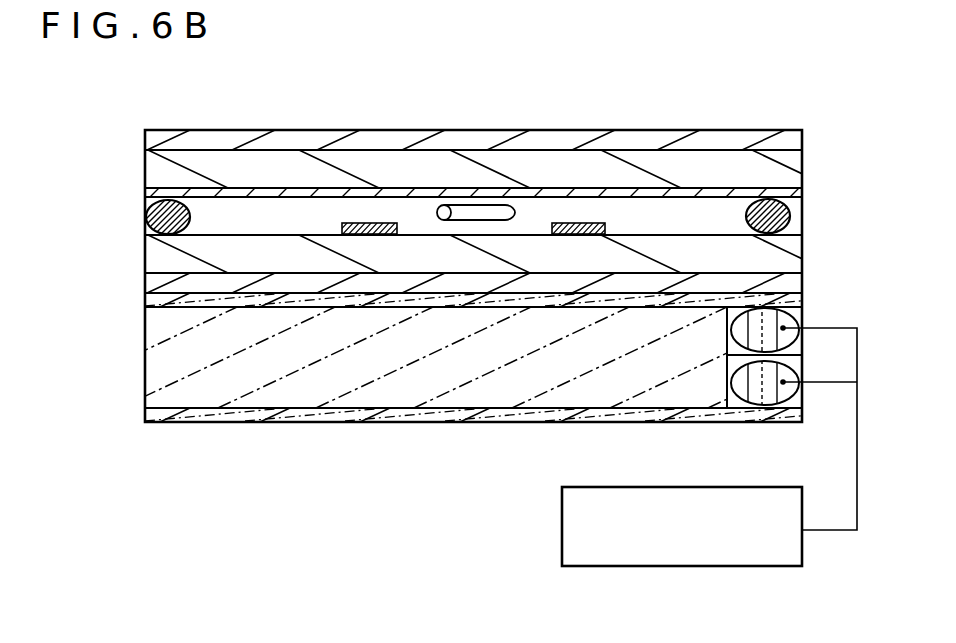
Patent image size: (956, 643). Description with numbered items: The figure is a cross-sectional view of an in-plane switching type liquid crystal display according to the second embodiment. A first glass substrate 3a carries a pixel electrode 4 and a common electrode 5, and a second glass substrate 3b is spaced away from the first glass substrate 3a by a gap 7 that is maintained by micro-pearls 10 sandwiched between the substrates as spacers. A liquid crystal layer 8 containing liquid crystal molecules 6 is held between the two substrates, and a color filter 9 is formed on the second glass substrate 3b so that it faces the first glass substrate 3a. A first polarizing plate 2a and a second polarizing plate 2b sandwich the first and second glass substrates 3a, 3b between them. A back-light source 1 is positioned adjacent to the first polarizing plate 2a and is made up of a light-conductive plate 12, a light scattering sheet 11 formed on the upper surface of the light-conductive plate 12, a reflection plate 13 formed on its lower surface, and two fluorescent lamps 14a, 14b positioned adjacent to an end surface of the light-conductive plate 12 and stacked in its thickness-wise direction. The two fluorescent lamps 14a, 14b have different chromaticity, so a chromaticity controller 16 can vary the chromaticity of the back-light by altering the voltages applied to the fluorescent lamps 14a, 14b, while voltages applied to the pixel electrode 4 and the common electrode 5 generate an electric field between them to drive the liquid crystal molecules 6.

The back-light source 1 is at (750, 379).
The first polarizing plate 2a is at (782, 290).
The second polarizing plate 2b is at (790, 143).
The first glass substrate 3a is at (782, 262).
The second glass substrate 3b is at (782, 172).
The pixel electrode 4 is at (342, 224).
The common electrode 5 is at (607, 228).
The liquid crystal molecule 6 is at (514, 216).
The gap 7 is at (207, 202).
The liquid crystal layer 8 is at (812, 197).
The color filter 9 is at (795, 192).
The micro-pearl 10 is at (145, 212).
The light scattering sheet 11 is at (152, 302).
The light-conductive plate 12 is at (155, 322).
The reflection plate 13 is at (152, 420).
The fluorescent lamp 14a is at (768, 412).
The fluorescent lamp 14b is at (728, 330).
The chromaticity controller 16 is at (723, 566).